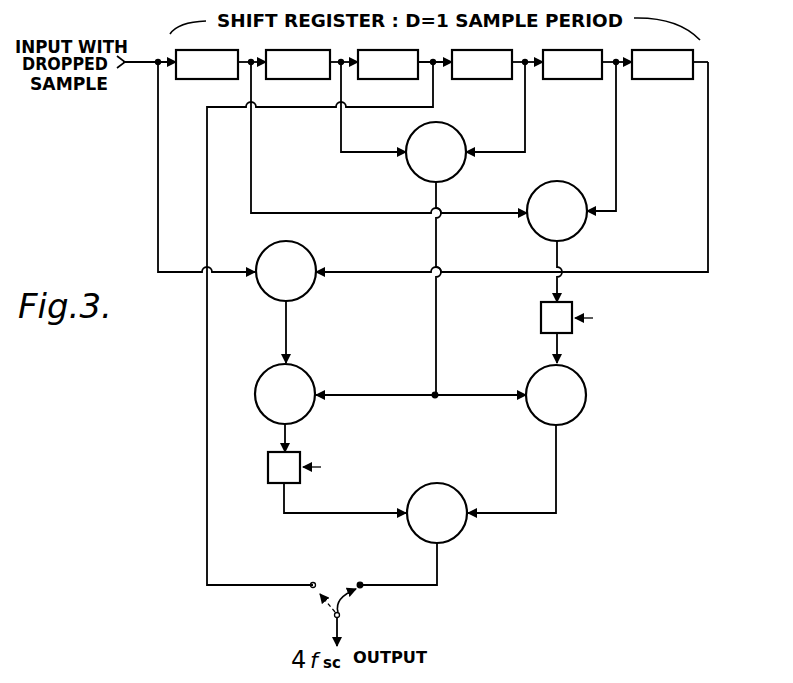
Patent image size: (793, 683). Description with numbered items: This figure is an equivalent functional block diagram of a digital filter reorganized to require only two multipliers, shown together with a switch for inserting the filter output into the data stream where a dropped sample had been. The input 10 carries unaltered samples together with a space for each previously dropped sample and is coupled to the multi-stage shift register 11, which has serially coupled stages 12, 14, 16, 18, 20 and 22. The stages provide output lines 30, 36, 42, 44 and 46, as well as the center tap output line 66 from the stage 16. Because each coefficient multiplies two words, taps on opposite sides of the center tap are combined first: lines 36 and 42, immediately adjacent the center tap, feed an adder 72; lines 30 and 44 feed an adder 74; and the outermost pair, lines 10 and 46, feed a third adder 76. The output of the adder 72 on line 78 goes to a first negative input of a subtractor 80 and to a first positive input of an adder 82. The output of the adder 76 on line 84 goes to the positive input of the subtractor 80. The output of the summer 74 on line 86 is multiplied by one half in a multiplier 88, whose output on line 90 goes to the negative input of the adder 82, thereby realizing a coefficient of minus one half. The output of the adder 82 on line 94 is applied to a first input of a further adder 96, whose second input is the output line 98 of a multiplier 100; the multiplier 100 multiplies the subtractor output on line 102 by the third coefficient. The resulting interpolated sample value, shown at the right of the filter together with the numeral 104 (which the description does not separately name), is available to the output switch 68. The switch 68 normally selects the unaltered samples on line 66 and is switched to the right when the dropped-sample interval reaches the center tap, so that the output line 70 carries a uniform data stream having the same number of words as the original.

The input line 10 is at (138, 60).
The multi-stage shift register 11 is at (716, 59).
The shift register stage 12 is at (219, 50).
The shift register stage 14 is at (310, 50).
The shift register stage 16 is at (406, 50).
The shift register stage 18 is at (500, 50).
The shift register stage 20 is at (590, 50).
The shift register stage 22 is at (676, 50).
The output line 30 is at (251, 170).
The output line 36 is at (341, 133).
The output line 42 is at (525, 105).
The output line 44 is at (616, 112).
The output line 46 is at (708, 112).
The center tap output line 66 is at (272, 590).
The output switch 68 is at (343, 592).
The output line 70 is at (341, 631).
The adder 72 is at (414, 176).
The adder 74 is at (575, 184).
The third adder 76 is at (310, 250).
The output line 78 is at (436, 327).
The subtractor 80 is at (305, 368).
The adder 82 is at (586, 410).
The output line 84 is at (285, 328).
The output line 86 is at (557, 253).
The multiplier 88 is at (574, 304).
The line 90 is at (562, 340).
The output line 94 is at (556, 487).
The adder 96 is at (450, 488).
The output line 98 is at (333, 514).
The multiplier 100 is at (267, 484).
The line 102 is at (292, 438).
The summer 96 output line 104 is at (437, 582).